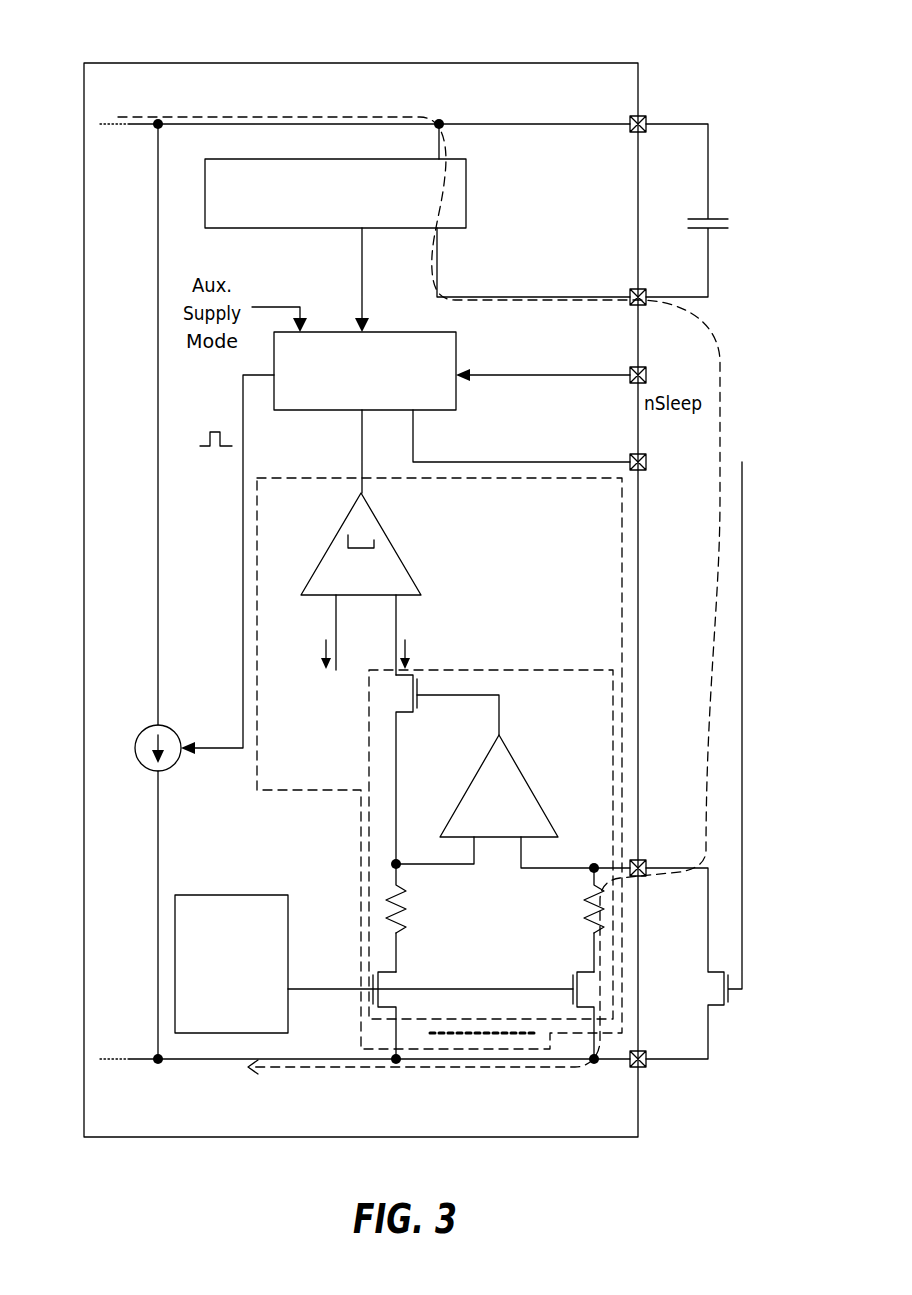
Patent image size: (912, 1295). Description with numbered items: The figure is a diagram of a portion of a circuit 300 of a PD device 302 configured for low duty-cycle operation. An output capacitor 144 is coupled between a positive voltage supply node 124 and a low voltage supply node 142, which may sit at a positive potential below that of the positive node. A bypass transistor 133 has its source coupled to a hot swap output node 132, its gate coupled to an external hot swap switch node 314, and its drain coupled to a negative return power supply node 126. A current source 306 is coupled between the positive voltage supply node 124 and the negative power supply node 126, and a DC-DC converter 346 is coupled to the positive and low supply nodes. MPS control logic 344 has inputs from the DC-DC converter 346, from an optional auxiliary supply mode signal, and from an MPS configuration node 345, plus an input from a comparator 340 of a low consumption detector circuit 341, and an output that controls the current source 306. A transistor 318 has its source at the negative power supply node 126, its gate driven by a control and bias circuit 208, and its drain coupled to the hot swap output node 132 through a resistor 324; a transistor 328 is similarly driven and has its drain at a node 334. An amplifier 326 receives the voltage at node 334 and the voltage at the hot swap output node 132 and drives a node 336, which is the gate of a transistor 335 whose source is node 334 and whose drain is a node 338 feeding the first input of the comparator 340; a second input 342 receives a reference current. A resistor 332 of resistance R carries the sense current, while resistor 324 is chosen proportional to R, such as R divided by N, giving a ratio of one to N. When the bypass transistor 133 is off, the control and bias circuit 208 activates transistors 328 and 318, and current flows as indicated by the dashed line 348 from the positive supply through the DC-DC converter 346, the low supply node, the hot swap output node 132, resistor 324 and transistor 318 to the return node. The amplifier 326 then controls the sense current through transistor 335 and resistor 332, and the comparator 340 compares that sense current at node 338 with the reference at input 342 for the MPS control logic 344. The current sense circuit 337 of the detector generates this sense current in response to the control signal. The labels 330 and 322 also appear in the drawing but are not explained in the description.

The circuit 300 is at (86, 36).
The PD device 302 is at (305, 63).
The positive voltage supply node 124 is at (648, 116).
The low voltage supply node 142 is at (630, 289).
The output capacitor 144 is at (719, 215).
The MPS configuration node 345 is at (543, 375).
The external hot swap switch node 314 is at (647, 453).
The hot swap output node 132 is at (648, 858).
The negative power supply node 126 is at (646, 1067).
The bypass transistor 133 is at (716, 1005).
The DC-DC converter 346 is at (232, 229).
The MPS control logic 344 is at (318, 412).
The current source 306 is at (156, 725).
The low consumption detector circuit 341 is at (257, 550).
The comparator 340 is at (392, 542).
The second input 342 is at (336, 617).
The node 338 is at (408, 616).
The current sense circuit 337 is at (368, 755).
The transistor 335 is at (418, 709).
The node 336 is at (499, 713).
The amplifier 326 is at (530, 783).
The node 334 is at (396, 864).
The resistor 332 is at (393, 918).
The transistor drain node 330 is at (397, 955).
The transistor 328 is at (373, 1000).
The control and bias circuit 208 is at (257, 895).
The resistor 324 is at (592, 919).
The transistor drain node 322 is at (594, 955).
The transistor 318 is at (573, 993).
The dashed line 348 is at (233, 116).